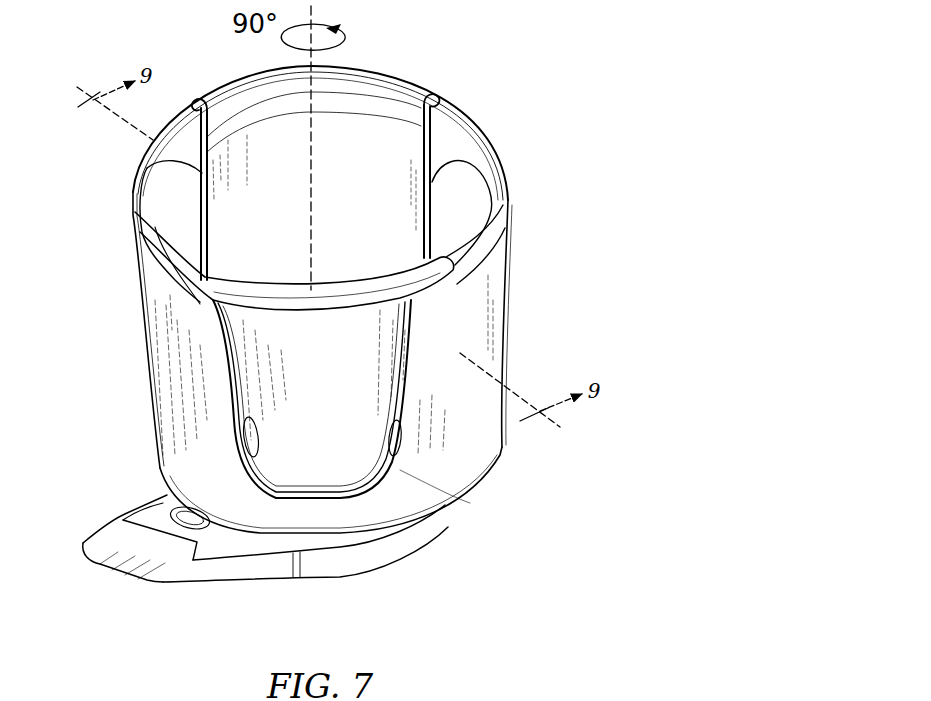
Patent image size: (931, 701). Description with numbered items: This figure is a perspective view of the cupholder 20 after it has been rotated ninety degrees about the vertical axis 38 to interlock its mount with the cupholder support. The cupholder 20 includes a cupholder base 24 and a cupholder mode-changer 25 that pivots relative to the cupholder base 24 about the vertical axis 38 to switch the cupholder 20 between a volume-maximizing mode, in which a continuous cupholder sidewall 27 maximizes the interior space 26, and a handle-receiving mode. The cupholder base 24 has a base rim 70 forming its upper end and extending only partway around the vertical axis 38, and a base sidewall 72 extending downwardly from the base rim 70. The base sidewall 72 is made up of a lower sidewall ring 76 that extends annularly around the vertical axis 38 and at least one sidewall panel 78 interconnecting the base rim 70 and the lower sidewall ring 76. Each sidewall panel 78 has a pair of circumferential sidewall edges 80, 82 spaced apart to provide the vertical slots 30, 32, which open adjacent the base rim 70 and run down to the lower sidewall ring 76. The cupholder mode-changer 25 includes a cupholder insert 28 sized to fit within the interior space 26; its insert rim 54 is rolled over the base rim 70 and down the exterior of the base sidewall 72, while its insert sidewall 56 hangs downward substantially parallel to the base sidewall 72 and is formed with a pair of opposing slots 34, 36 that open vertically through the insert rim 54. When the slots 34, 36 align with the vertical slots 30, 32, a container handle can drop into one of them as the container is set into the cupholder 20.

The cupholder 20 is at (551, 80).
The cupholder base 24 is at (521, 307).
The cupholder mode-changer 25 is at (358, 55).
The interior space 26 is at (481, 160).
The cupholder sidewall 27 is at (172, 229).
The cupholder insert 28 is at (406, 68).
The vertical slot 30 is at (368, 478).
The vertical slot 32 is at (370, 112).
The slot 34 is at (152, 179).
The slot 36 is at (459, 137).
The vertical axis 38 is at (313, 9).
The insert rim 54 is at (236, 78).
The insert sidewall 56 is at (231, 152).
The base rim 70 is at (505, 178).
The base sidewall 72 is at (146, 380).
The lower sidewall ring 76 is at (339, 522).
The sidewall panel 78 is at (165, 408).
The circumferential sidewall edge 80 is at (253, 480).
The circumferential sidewall edge 82 is at (396, 463).